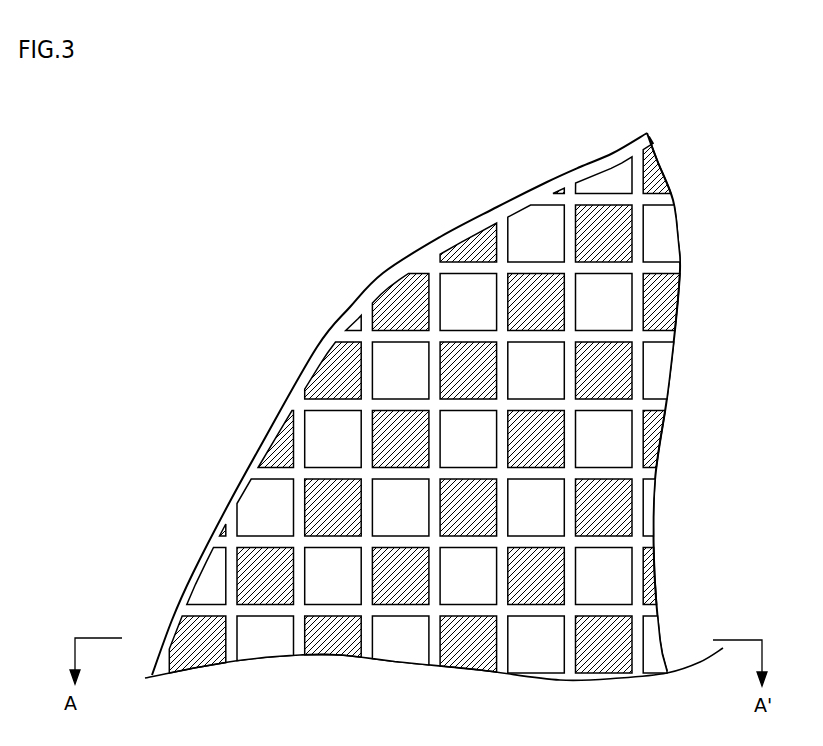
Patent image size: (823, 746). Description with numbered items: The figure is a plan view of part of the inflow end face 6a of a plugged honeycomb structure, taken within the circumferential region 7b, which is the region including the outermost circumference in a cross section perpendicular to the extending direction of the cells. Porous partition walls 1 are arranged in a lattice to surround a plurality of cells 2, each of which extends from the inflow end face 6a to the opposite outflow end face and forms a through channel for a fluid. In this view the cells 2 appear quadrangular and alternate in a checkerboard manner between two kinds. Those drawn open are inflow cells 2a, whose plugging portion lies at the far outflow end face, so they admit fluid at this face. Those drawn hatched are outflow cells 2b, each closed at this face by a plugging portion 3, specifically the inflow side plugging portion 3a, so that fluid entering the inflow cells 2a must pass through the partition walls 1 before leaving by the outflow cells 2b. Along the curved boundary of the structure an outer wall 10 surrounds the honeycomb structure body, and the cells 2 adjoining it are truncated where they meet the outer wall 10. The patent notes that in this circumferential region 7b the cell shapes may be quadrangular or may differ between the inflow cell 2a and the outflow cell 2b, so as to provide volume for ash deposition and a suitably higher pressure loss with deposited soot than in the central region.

The partition wall 1 is at (603, 268).
The cell 2 is at (639, 403).
The inflow cell 2a is at (538, 371).
The outflow cell 2b is at (535, 437).
The plugging portion 3 is at (640, 573).
The inflow side plugging portion 3a is at (540, 574).
The inflow end face 6a is at (340, 272).
The circumferential region 7b is at (710, 108).
The outer wall 10 is at (463, 235).